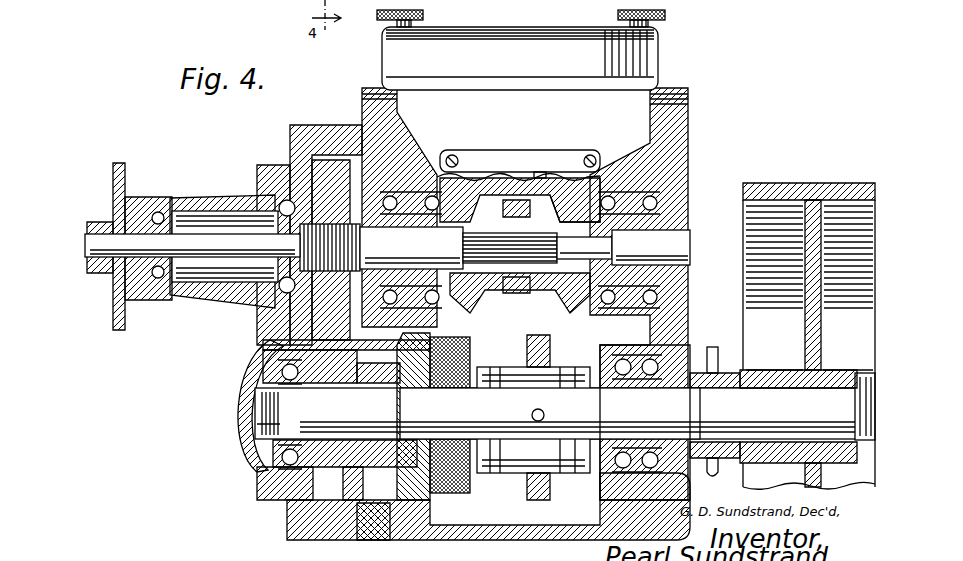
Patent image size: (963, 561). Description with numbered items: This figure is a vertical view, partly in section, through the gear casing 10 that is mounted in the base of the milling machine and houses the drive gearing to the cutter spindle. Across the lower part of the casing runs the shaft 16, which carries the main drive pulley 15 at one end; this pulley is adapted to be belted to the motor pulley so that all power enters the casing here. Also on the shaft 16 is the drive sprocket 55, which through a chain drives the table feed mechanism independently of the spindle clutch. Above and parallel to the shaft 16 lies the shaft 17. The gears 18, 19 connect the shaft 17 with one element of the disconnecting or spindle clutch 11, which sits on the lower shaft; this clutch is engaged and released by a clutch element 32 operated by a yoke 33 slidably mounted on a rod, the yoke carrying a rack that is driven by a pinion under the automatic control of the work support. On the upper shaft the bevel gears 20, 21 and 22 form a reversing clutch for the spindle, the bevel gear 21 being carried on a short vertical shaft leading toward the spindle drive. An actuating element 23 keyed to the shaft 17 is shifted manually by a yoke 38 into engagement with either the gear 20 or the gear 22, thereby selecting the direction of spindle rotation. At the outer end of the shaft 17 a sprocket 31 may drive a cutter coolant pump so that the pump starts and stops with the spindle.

The casing 10 is at (341, 125).
The spindle clutch 11 is at (462, 352).
The main drive pulley 15 is at (787, 183).
The shaft 16 is at (692, 372).
The shaft 17 is at (409, 233).
The gear 18 is at (323, 312).
The gear 19 is at (323, 347).
The bevel gear 20 is at (471, 176).
The bevel gear 21 is at (516, 177).
The bevel gear 22 is at (553, 177).
The actuating element 23 is at (540, 172).
The sprocket 31 is at (125, 179).
The clutch element 32 is at (508, 368).
The yoke 33 is at (540, 337).
The yoke 38 is at (506, 177).
The drive sprocket 55 is at (715, 350).